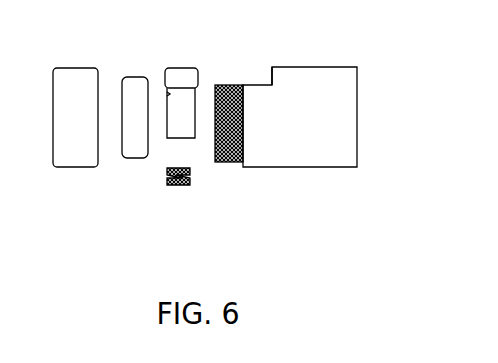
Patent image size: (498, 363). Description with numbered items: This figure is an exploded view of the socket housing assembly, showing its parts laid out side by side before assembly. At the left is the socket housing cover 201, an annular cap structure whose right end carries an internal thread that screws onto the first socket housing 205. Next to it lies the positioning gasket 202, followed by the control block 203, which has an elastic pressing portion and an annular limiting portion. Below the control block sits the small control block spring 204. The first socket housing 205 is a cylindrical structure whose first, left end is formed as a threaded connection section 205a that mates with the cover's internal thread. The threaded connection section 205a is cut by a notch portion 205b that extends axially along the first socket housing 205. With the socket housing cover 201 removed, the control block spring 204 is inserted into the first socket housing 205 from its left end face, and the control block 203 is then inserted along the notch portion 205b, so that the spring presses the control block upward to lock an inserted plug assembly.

The socket housing cover 201 is at (77, 68).
The positioning gasket 202 is at (137, 77).
The control block 203 is at (183, 68).
The control block spring 204 is at (183, 183).
The first socket housing 205 is at (307, 67).
The threaded connection section 205a is at (233, 165).
The notch portion 205b is at (260, 83).